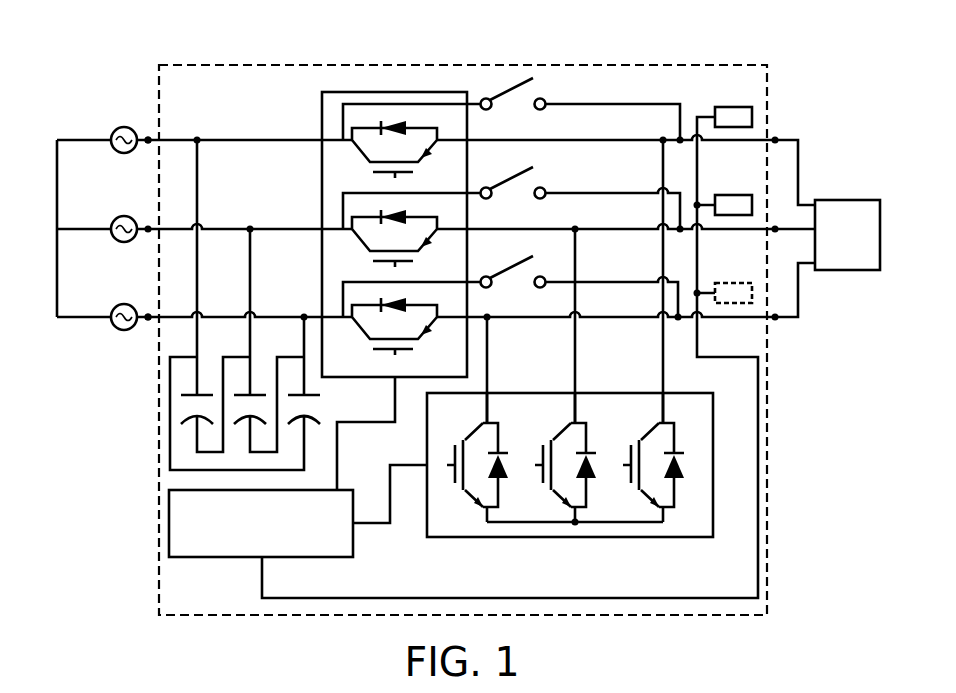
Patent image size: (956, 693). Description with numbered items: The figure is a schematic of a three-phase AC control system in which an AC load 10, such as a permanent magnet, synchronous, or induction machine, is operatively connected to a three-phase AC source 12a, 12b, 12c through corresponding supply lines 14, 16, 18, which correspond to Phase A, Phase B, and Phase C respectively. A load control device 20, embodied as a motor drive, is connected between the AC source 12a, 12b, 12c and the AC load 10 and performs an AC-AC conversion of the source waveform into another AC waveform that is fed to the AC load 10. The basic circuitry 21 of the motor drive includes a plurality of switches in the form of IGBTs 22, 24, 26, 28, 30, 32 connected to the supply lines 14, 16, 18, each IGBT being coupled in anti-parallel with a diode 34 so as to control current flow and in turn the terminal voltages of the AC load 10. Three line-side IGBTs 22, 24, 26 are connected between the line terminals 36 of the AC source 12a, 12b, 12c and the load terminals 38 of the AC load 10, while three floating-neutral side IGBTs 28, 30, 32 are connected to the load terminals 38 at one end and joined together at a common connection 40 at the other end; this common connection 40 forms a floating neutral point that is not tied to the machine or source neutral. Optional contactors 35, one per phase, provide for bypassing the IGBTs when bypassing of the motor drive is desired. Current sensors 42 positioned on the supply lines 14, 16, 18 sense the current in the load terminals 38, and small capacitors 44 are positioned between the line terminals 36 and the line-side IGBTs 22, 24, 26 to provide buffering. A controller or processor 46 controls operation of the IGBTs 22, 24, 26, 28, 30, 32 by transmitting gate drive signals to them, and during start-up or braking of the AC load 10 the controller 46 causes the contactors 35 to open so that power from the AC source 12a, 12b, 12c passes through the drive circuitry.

The AC load 10 is at (866, 199).
The AC source phase 12a is at (111, 131).
The AC source phase 12b is at (111, 220).
The AC source phase 12c is at (111, 308).
The supply line 14 is at (600, 140).
The supply line 16 is at (600, 229).
The supply line 18 is at (602, 317).
The load control device 20 is at (582, 45).
The circuitry 21 is at (260, 115).
The line-side IGBT 22 is at (368, 167).
The line-side IGBT 24 is at (368, 256).
The line-side IGBT 26 is at (370, 345).
The floating-neutral side IGBT 28 is at (635, 443).
The floating-neutral side IGBT 30 is at (547, 443).
The floating-neutral side IGBT 32 is at (455, 444).
The diode 34 is at (381, 123).
The contactor 35 is at (505, 88).
The line terminal 36 is at (148, 137).
The load terminal 38 is at (776, 139).
The common connection 40 is at (497, 523).
The current sensor 42 is at (719, 106).
The capacitor 44 is at (185, 435).
The controller or processor 46 is at (212, 559).